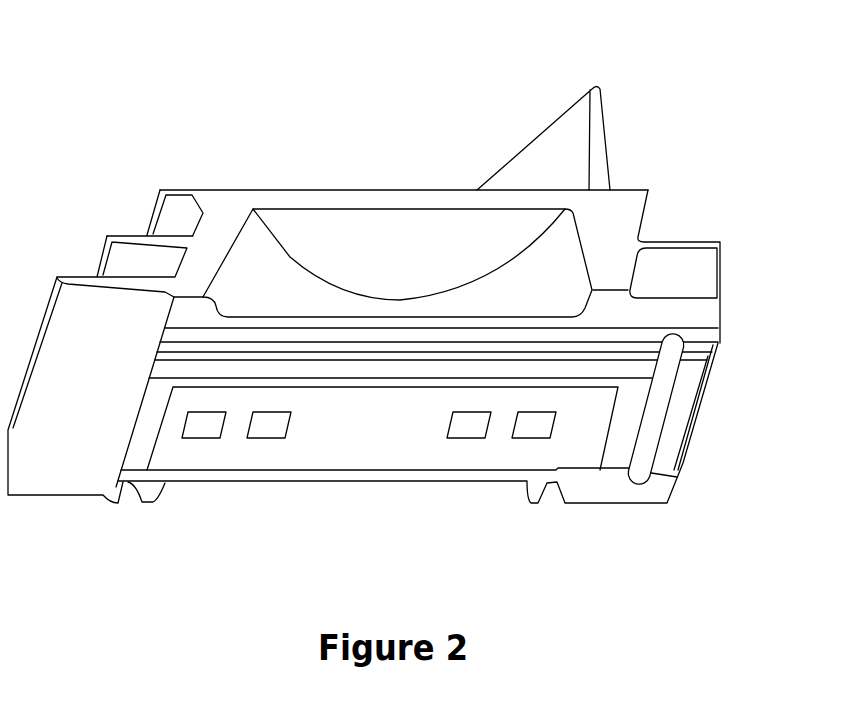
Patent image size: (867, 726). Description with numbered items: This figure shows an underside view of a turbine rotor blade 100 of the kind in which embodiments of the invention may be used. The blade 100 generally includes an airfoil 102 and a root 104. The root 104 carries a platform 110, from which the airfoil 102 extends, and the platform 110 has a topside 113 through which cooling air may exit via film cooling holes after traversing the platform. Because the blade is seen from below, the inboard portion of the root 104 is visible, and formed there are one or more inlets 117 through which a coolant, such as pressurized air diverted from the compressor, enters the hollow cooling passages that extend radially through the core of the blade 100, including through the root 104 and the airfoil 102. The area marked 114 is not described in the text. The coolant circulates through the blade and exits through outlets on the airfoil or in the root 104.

The turbine rotor blade 100 is at (128, 64).
The airfoil 102 is at (562, 138).
The root 104 is at (745, 387).
The platform 110 is at (160, 164).
The topside of the platform 113 is at (302, 189).
The recess opening 114 is at (425, 275).
The inlets 117 is at (202, 428).